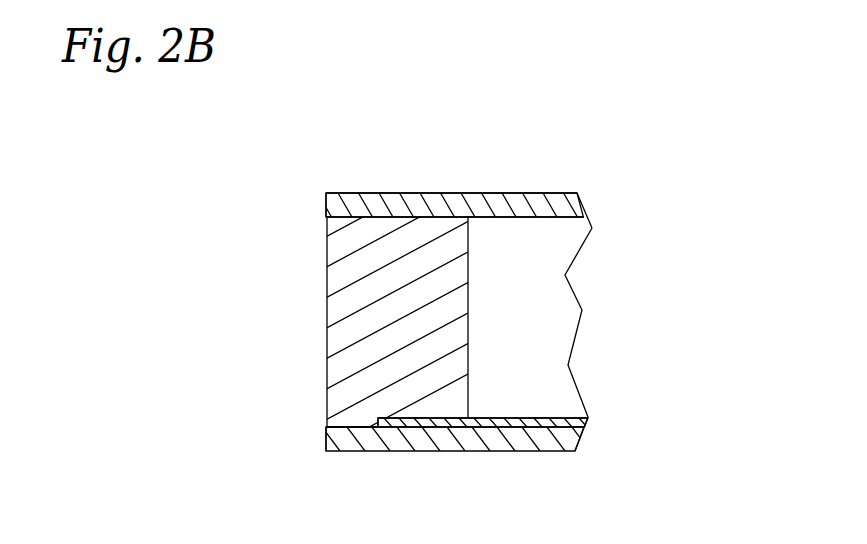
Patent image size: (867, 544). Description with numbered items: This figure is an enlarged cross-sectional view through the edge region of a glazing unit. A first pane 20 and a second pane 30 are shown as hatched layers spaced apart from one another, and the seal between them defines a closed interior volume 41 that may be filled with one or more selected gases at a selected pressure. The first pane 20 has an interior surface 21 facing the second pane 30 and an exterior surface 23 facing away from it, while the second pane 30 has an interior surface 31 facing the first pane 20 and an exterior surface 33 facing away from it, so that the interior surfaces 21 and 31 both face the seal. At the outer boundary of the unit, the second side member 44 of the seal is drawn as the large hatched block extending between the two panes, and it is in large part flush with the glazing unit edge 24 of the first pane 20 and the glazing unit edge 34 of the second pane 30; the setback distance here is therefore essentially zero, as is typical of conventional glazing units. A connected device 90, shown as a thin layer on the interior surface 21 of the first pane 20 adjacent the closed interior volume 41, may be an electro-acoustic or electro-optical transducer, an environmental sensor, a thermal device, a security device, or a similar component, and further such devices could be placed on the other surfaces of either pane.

The first pane 20 is at (492, 438).
The interior surface 21 is at (367, 425).
The exterior surface 23 is at (524, 440).
The glazing unit edge 24 is at (326, 440).
The second pane 30 is at (457, 203).
The interior surface 31 is at (533, 232).
The exterior surface 33 is at (407, 198).
The glazing unit edge 34 is at (326, 196).
The closed interior volume 41 is at (545, 313).
The second side member 44 is at (357, 300).
The connected device 90 is at (552, 417).